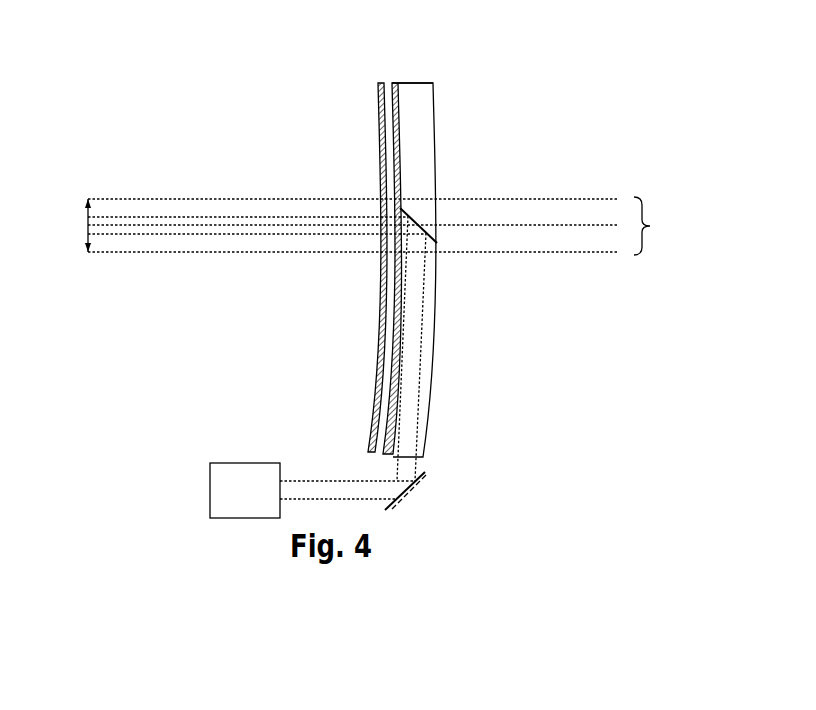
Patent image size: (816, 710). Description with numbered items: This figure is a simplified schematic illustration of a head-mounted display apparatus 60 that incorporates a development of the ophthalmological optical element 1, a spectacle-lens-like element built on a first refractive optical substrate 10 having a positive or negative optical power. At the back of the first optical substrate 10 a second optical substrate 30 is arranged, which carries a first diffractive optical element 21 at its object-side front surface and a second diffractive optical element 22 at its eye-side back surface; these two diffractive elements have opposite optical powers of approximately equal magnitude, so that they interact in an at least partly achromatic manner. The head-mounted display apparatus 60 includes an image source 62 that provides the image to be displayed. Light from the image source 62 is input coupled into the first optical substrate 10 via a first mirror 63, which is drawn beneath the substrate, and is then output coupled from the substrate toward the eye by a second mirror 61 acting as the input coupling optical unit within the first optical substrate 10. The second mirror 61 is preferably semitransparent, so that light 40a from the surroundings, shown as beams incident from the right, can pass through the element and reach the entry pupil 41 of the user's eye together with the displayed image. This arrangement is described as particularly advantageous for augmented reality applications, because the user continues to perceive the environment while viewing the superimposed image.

The ophthalmological optical element 1 is at (296, 74).
The first refractive optical substrate 10 is at (423, 103).
The first diffractive optical element 21 is at (398, 83).
The second diffractive optical element 22 is at (380, 86).
The second optical substrate 30 is at (382, 98).
The entry pupil 41 is at (88, 215).
The beam 40a is at (661, 226).
The head-mounted display apparatus 60 is at (548, 134).
The input coupling optical unit / second mirror 61 is at (420, 218).
The image source 62 is at (210, 490).
The first mirror 63 is at (412, 493).